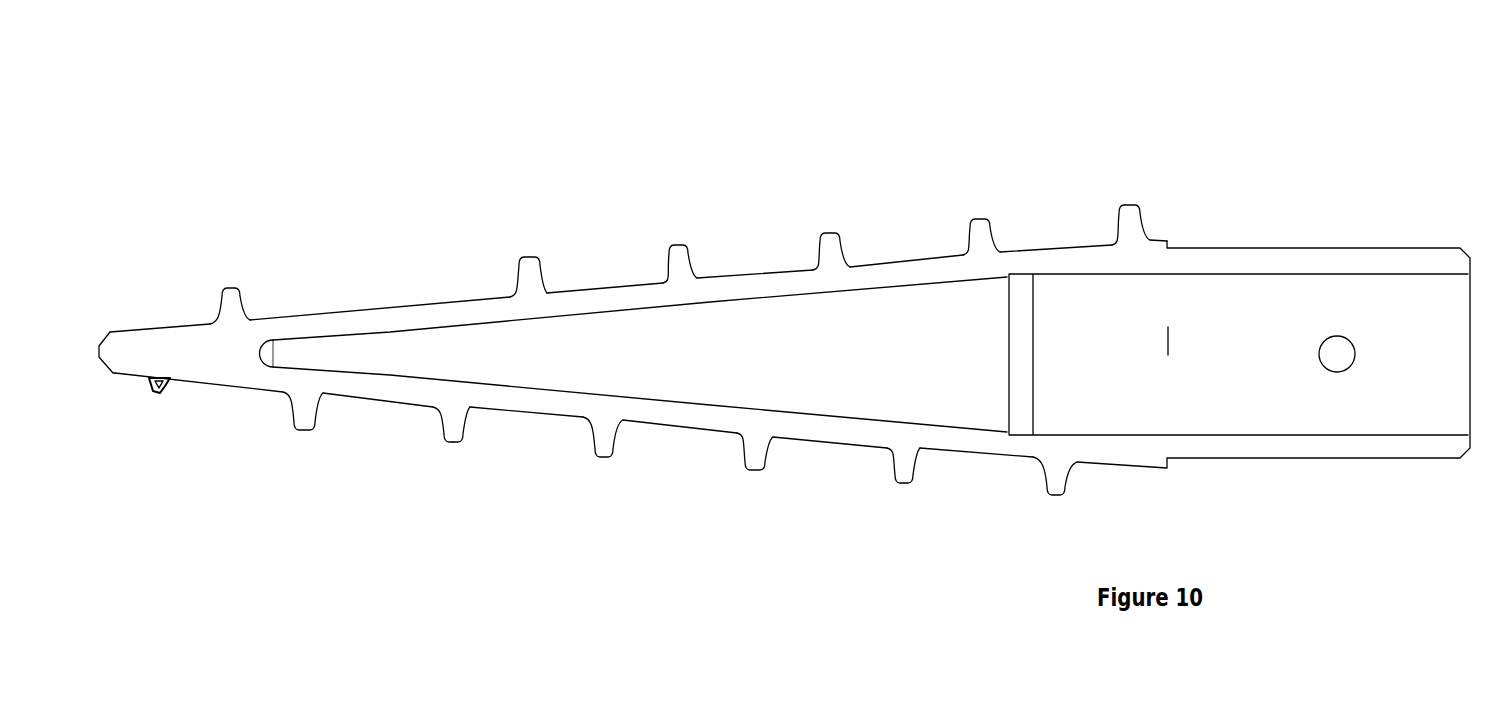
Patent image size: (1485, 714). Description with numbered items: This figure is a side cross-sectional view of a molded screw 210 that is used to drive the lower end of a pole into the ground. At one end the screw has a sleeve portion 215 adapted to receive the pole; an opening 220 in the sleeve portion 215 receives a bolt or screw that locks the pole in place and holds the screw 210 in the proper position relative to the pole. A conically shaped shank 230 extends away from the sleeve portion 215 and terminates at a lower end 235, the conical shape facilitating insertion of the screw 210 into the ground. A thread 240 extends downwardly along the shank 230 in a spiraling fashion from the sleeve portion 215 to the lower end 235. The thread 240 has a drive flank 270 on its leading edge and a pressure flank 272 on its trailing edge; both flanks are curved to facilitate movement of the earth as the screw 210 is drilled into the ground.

The molded screw 210 is at (324, 153).
The sleeve portion 215 is at (1342, 253).
The opening 220 is at (1342, 362).
The shank 230 is at (678, 425).
The lower end 235 is at (113, 362).
The thread 240 is at (665, 214).
The drive flank 270 is at (442, 418).
The pressure flank 272 is at (467, 423).